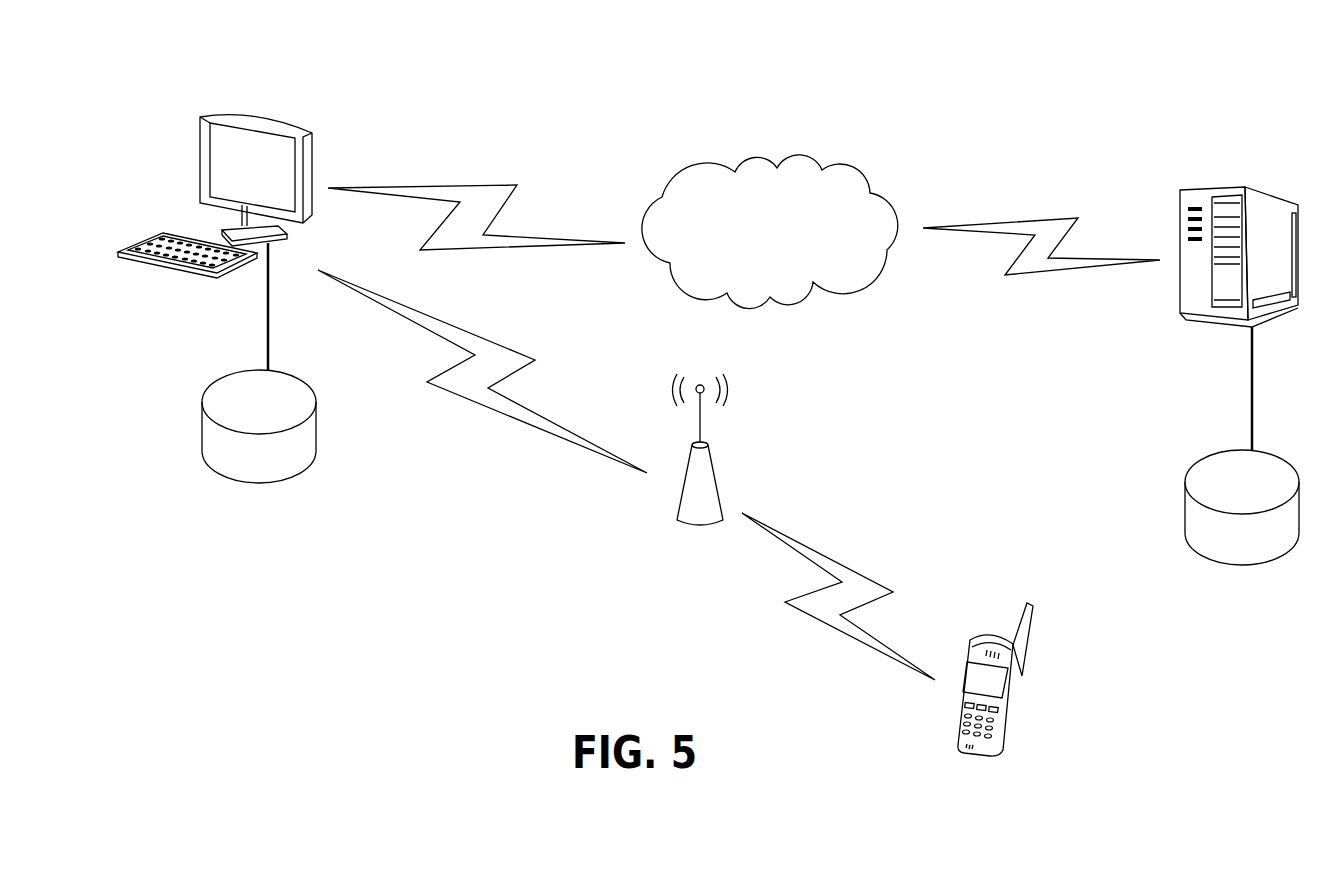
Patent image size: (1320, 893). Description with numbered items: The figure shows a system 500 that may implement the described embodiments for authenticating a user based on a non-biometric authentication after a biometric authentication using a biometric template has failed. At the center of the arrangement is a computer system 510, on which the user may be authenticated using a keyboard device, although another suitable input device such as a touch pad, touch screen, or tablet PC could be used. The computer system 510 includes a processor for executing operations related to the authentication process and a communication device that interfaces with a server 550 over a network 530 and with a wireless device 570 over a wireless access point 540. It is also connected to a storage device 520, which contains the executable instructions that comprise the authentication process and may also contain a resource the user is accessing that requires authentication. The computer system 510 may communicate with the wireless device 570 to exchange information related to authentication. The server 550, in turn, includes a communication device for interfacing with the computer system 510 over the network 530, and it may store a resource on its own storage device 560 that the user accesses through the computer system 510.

The system 500 is at (350, 686).
The computer system 510 is at (273, 118).
The storage device 520 is at (257, 483).
The network 530 is at (812, 150).
The wireless access point 540 is at (677, 523).
The server 550 is at (1212, 188).
The storage device 560 is at (1185, 517).
The wireless device 570 is at (1025, 673).